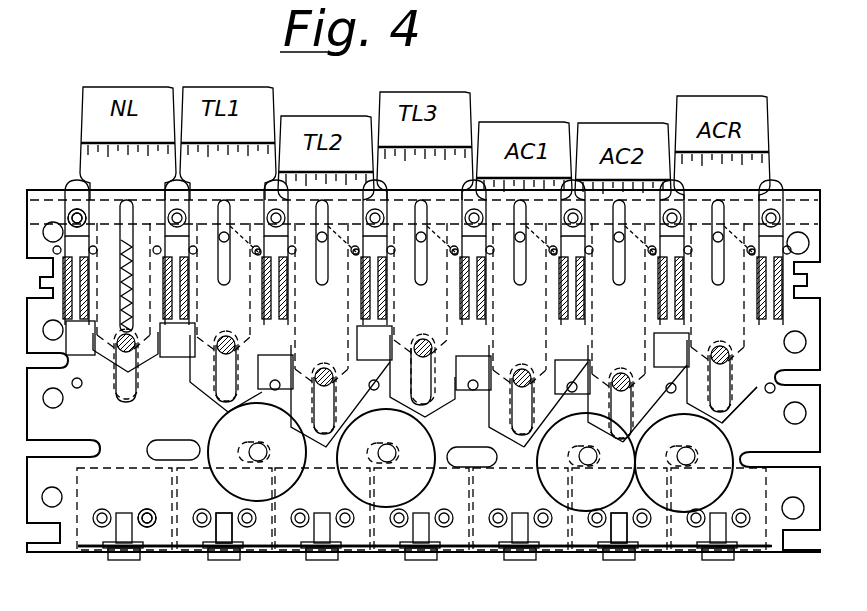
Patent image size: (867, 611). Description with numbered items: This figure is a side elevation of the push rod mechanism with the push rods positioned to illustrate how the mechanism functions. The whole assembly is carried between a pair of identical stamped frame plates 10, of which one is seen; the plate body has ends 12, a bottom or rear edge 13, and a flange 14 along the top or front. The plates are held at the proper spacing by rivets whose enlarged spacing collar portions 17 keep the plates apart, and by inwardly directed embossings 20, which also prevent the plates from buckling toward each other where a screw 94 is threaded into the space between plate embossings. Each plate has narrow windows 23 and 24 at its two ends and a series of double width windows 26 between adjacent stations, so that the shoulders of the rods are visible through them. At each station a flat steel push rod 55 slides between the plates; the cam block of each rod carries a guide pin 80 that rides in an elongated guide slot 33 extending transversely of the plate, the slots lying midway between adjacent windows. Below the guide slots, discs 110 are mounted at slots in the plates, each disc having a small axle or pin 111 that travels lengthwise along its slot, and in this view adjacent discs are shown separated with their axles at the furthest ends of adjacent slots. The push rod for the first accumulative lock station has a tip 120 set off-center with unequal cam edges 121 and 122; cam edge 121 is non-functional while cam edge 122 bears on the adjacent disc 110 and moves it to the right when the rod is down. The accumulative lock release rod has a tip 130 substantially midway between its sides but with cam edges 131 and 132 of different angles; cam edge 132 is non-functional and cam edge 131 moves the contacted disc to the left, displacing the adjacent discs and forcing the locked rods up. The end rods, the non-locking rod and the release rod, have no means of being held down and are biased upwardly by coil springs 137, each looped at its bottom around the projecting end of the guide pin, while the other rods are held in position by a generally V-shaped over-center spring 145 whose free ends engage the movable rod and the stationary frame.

The frame plate 10 is at (42, 190).
The ends 12 is at (28, 548).
The bottom edge 13 is at (271, 550).
The flange 14 is at (808, 198).
The spacing collar portions 17 is at (72, 205).
The embossings 20 is at (78, 390).
The narrow window 23 is at (80, 345).
The narrow window 24 is at (725, 380).
The double width windows 26 is at (173, 358).
The elongated guide slots 33 is at (128, 393).
The push rod 55 is at (786, 168).
The guide pin 80 is at (232, 330).
The screw 94 is at (221, 560).
The disc 110 is at (729, 496).
The axle or pin 111 is at (262, 446).
The tip 120 is at (531, 448).
The cam edge 121 is at (462, 410).
The cam edge 122 is at (648, 420).
The tip 130 is at (739, 430).
The cam edge 131 is at (669, 395).
The cam edge 132 is at (739, 400).
The coil spring 137 is at (106, 200).
The over-center spring 145 is at (228, 200).